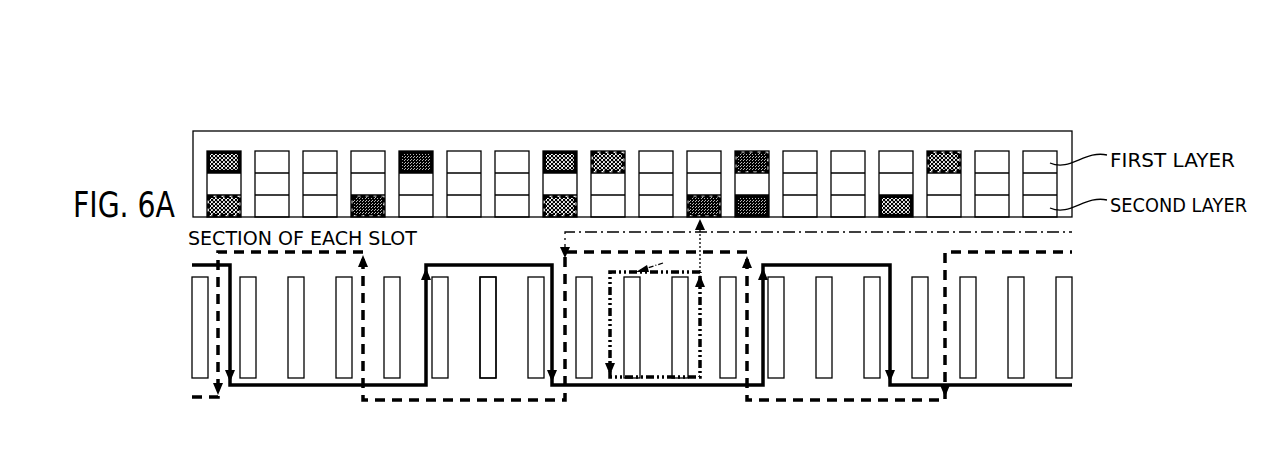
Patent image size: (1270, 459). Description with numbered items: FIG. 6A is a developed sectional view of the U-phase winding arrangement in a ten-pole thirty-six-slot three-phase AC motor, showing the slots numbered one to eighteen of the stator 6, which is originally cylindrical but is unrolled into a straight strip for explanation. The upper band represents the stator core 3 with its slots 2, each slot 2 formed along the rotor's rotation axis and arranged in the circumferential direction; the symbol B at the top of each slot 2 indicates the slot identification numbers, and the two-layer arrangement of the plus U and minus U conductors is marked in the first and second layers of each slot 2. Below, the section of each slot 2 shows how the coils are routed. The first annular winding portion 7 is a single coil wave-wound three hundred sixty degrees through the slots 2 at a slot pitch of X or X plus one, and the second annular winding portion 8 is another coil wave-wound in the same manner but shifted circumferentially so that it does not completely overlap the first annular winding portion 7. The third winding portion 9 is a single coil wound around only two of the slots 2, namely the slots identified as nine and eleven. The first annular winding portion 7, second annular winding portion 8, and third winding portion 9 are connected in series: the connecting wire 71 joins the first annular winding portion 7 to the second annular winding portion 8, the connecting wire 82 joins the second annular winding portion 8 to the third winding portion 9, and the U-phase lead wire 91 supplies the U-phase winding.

The slot 2 is at (514, 378).
The stator core 3 is at (493, 131).
The stator 6 is at (632, 138).
The slot identification number B is at (622, 131).
The first annular winding portion 7 is at (282, 386).
The second annular winding portion 8 is at (389, 402).
The third winding portion 9 is at (652, 381).
The connecting wire 71 is at (565, 234).
The connecting wire 82 is at (663, 263).
The U-phase lead wire 91 is at (702, 243).